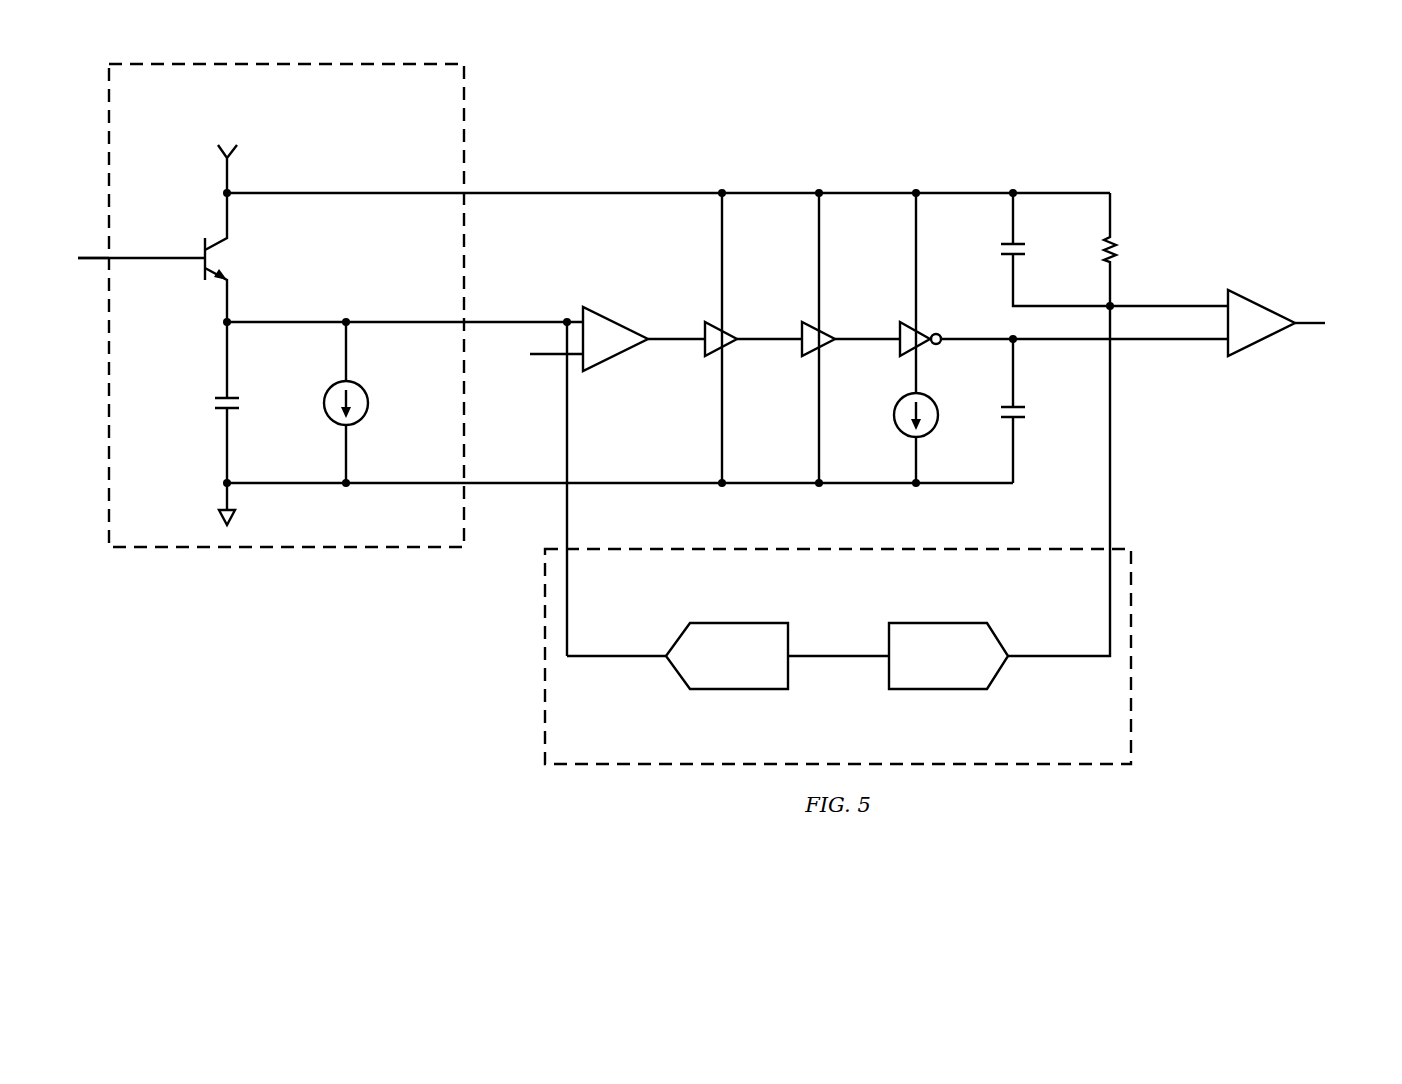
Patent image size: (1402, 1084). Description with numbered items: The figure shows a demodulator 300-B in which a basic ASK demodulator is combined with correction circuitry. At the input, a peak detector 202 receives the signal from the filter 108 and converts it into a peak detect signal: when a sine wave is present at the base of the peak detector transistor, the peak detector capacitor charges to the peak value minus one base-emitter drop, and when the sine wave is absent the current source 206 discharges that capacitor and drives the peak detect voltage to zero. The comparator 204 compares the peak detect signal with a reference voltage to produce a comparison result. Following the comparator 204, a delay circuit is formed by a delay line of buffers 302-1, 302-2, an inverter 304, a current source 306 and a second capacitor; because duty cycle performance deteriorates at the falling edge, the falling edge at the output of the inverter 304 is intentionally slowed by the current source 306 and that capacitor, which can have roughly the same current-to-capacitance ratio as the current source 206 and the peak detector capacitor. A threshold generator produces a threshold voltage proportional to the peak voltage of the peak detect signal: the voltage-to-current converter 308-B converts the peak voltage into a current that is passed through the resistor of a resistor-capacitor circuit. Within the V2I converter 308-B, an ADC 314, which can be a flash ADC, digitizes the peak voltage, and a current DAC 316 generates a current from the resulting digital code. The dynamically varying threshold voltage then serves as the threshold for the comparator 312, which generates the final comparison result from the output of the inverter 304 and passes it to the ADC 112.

The peak detector 202 is at (568, 305).
The filter 108 is at (65, 258).
The current source 206 is at (368, 402).
The demodulator 300-B is at (846, 146).
The comparator 204 is at (612, 356).
The buffer 302-1 is at (704, 326).
The buffer 302-2 is at (820, 324).
The inverter 304 is at (922, 326).
The current source 306 is at (893, 428).
The voltage-to-current converter 308-B is at (1140, 612).
The comparator 312 is at (1262, 302).
The ADC 112 is at (1337, 324).
The ADC 314 is at (726, 690).
The current digital-to-analog converter 316 is at (948, 690).